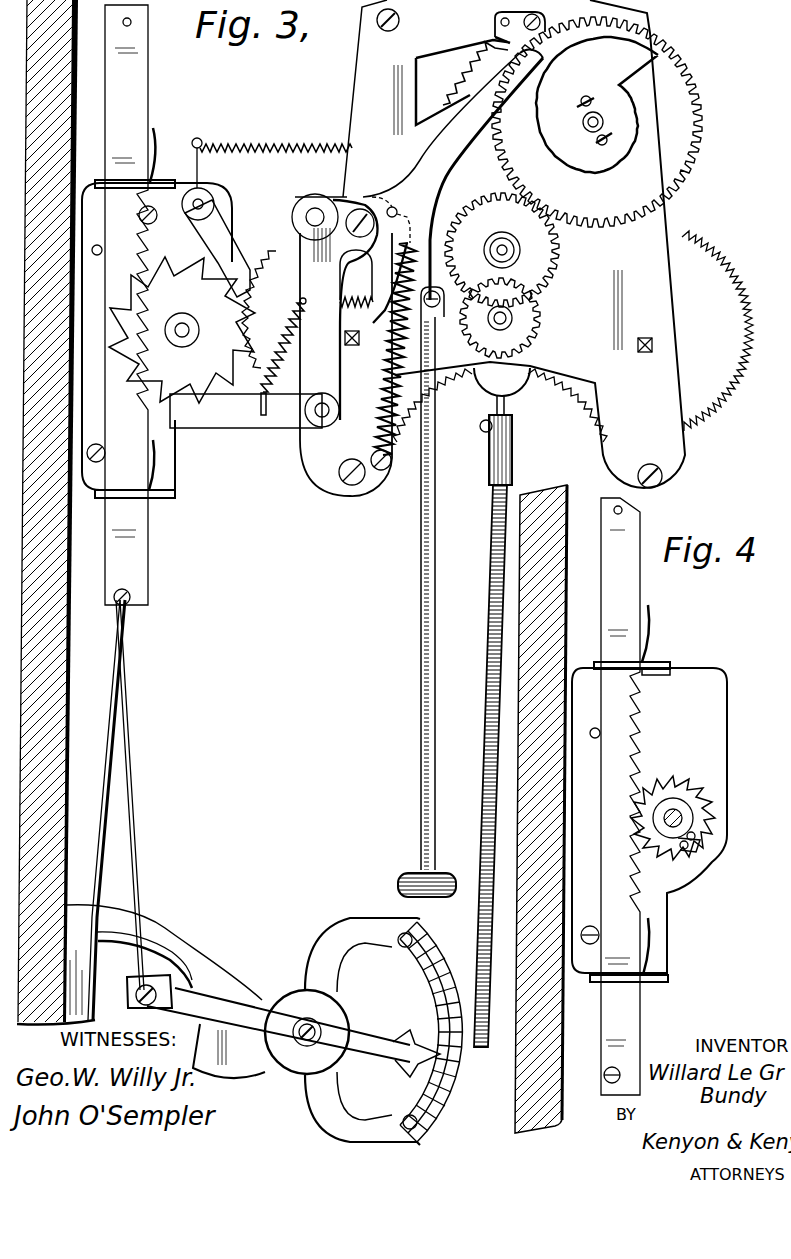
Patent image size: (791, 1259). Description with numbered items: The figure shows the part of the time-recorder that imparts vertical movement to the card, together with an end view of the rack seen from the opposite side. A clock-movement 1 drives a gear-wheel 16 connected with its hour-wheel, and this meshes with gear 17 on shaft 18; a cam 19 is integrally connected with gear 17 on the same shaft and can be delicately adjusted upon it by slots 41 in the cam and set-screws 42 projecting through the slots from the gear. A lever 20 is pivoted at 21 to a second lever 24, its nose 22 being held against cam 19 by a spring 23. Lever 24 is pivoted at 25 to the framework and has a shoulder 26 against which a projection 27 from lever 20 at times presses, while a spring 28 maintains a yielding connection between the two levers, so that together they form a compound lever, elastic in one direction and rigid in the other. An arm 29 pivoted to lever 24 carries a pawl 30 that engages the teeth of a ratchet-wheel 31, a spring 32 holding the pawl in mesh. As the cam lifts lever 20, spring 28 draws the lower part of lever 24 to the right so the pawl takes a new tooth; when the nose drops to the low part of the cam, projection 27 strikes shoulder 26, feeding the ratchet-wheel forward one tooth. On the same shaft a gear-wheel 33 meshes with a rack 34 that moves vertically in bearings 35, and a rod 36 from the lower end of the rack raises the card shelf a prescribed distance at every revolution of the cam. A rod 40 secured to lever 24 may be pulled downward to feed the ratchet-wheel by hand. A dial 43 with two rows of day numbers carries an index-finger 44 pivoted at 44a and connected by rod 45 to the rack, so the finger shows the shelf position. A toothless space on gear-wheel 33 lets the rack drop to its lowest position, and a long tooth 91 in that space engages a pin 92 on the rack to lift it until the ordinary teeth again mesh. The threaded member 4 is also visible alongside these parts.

In FIG. 3, the clock-movement 1 is at (514, 244).
In FIG. 3, the threaded rod 4 is at (489, 576).
In FIG. 3, the gear-wheel 16 is at (509, 256).
In FIG. 3, the gear 17 is at (597, 122).
In FIG. 3, the shaft 18 is at (603, 122).
In FIG. 3, the cam 19 is at (597, 105).
In FIG. 3, the lever 20 is at (453, 170).
In FIG. 3, the pivot 21 is at (361, 209).
In FIG. 3, the nose 22 is at (530, 34).
In FIG. 3, the spring 23 is at (395, 376).
In FIG. 3, the second lever 24 is at (300, 250).
In FIG. 3, the pivot 25 is at (306, 212).
In FIG. 3, the shoulder 26 is at (411, 221).
In FIG. 3, the projection 27 is at (381, 196).
In FIG. 3, the spring 28 is at (356, 278).
In FIG. 3, the arm 29 is at (246, 405).
In FIG. 3, the pawl 30 is at (190, 428).
In FIG. 3, the ratchet-wheel 31 is at (182, 330).
In FIG. 3, the spring 32 is at (283, 345).
In FIG. 4, the gear-wheel 33 is at (678, 785).
In FIG. 3, the rack 34 is at (126, 305).
In FIG. 4, the rack 34 is at (620, 796).
In FIG. 3, the bearings 35 is at (100, 180).
In FIG. 4, the bearings 35 is at (658, 667).
In FIG. 3, the rod 36 is at (108, 776).
In FIG. 3, the rod 40 is at (421, 608).
In FIG. 3, the slots 41 is at (578, 106).
In FIG. 3, the set-screws 42 is at (591, 97).
In FIG. 3, the dial 43 is at (410, 992).
In FIG. 3, the index-finger 44 is at (232, 1003).
In FIG. 3, the pivot 44a is at (302, 1046).
In FIG. 3, the rod 45 is at (138, 846).
In FIG. 4, the long tooth 91 is at (712, 851).
In FIG. 3, the pin 92 is at (135, 309).
In FIG. 4, the pin 92 is at (630, 790).